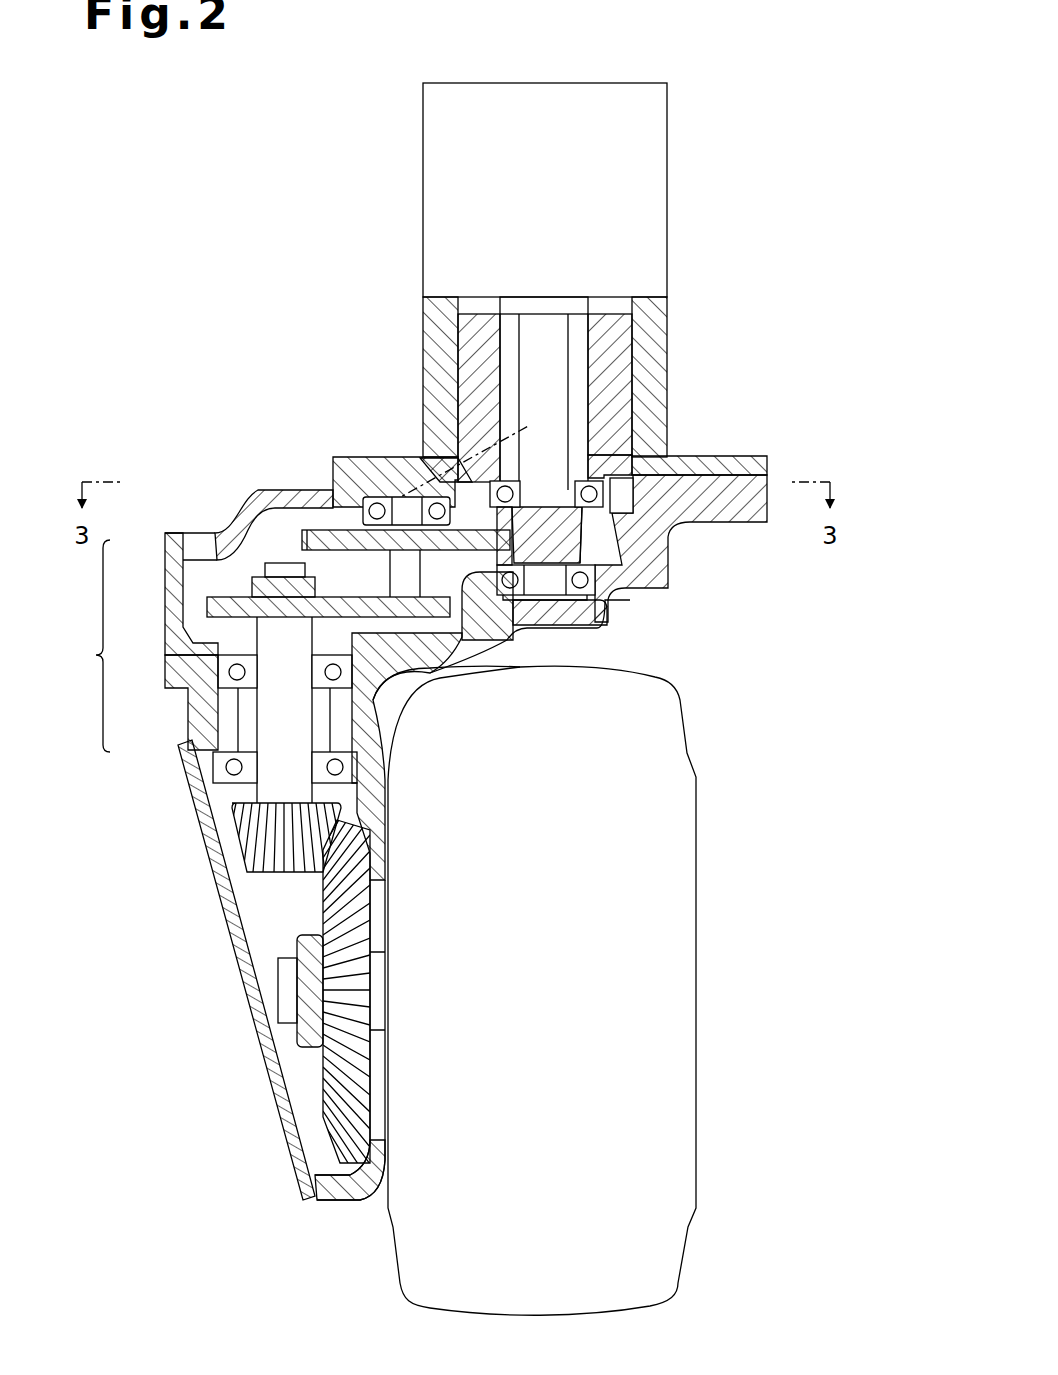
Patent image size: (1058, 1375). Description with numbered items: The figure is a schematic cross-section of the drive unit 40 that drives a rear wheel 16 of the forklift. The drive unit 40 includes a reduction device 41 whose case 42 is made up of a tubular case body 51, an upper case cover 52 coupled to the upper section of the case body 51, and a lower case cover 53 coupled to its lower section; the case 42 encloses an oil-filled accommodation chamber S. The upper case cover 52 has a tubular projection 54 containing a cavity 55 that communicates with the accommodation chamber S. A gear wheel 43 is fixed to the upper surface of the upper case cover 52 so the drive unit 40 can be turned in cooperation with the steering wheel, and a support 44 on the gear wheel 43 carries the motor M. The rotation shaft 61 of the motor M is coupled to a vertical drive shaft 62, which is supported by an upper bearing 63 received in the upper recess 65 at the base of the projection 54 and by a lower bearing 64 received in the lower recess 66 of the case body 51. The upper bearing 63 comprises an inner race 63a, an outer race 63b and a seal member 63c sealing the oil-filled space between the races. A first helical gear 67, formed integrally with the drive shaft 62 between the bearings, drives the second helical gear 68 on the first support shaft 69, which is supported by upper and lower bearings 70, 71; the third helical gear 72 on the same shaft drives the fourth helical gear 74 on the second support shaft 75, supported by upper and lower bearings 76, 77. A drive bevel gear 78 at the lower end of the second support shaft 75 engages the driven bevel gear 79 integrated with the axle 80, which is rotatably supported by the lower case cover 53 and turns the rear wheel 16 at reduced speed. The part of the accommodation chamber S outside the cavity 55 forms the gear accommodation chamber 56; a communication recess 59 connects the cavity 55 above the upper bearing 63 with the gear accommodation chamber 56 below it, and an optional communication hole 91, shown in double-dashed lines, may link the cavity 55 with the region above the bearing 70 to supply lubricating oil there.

The drive unit 40 is at (213, 152).
The motor M is at (665, 192).
The rotation shaft 61 is at (546, 300).
The drive shaft 62 is at (535, 375).
The cavity 55 is at (510, 333).
The tubular projection 54 is at (630, 330).
The support 44 is at (660, 352).
The communication hole 91 is at (520, 455).
The upper recess 65 is at (440, 458).
The gear wheel 43 is at (770, 463).
The seal member 63c is at (605, 467).
The inner race 63a is at (518, 478).
The upper bearing 63 is at (640, 533).
The communication recess 59 is at (617, 503).
The first helical gear 67 is at (522, 494).
The gear accommodation chamber 56 is at (607, 552).
The lower bearing 64 is at (590, 610).
The outer race 63b is at (500, 512).
The lower bearing 71 is at (468, 660).
The lower recess 66 is at (507, 640).
The upper bearing 70 is at (365, 518).
The second helical gear 68 is at (302, 540).
The first support shaft 69 is at (392, 570).
The third helical gear 72 is at (435, 600).
The fourth helical gear 74 is at (285, 617).
The upper bearing 76 is at (255, 678).
The lower bearing 77 is at (250, 775).
The upper case cover 52 is at (165, 553).
The case body 51 is at (165, 660).
The lower case cover 53 is at (178, 756).
The case 42 is at (83, 646).
The reduction device 41 is at (246, 572).
The accommodation chamber S is at (200, 573).
The second support shaft 75 is at (378, 723).
The drive bevel gear 78 is at (282, 872).
The driven bevel gear 79 is at (362, 925).
The axle 80 is at (382, 990).
The rear wheel 16 is at (696, 990).